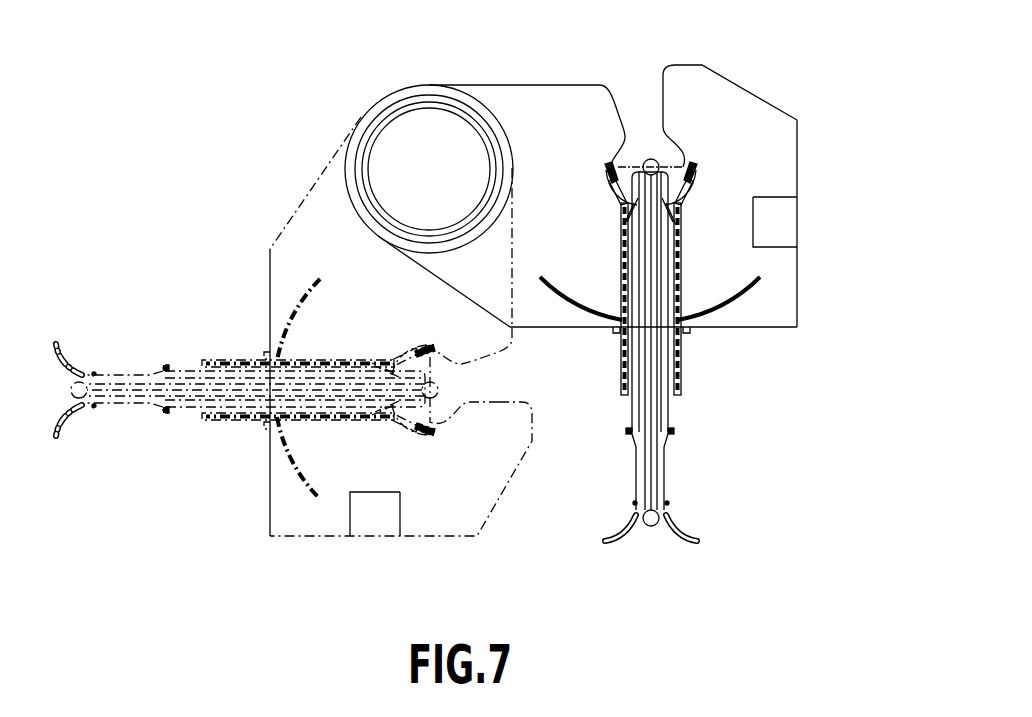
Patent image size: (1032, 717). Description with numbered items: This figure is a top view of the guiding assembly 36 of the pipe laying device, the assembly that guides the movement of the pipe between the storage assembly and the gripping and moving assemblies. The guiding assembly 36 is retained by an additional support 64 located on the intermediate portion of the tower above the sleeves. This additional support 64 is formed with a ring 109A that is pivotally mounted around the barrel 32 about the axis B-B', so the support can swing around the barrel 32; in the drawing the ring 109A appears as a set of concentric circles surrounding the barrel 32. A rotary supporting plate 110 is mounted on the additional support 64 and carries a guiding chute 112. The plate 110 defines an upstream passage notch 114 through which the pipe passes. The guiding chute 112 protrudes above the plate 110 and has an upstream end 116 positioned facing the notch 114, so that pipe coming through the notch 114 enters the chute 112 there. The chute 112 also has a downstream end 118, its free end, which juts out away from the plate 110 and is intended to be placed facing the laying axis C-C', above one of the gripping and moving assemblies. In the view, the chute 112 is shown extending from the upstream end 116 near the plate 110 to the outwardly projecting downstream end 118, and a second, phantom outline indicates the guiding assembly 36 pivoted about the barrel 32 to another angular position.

The additional support 64 is at (360, 92).
The ring 109A is at (422, 91).
The barrel 32 is at (488, 95).
The upstream passage notch 114 is at (663, 98).
The rotary supporting plate 110 is at (773, 105).
The guiding assembly 36 is at (829, 178).
The upstream end 116 is at (615, 187).
The guiding chute 112 is at (660, 477).
The downstream end 118 is at (648, 517).